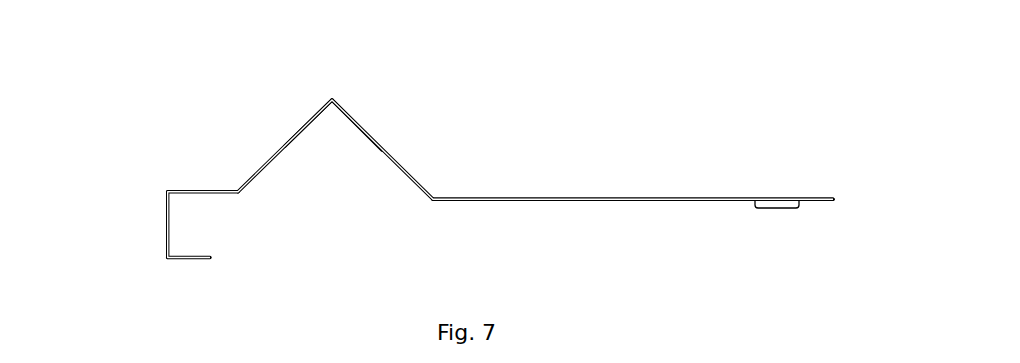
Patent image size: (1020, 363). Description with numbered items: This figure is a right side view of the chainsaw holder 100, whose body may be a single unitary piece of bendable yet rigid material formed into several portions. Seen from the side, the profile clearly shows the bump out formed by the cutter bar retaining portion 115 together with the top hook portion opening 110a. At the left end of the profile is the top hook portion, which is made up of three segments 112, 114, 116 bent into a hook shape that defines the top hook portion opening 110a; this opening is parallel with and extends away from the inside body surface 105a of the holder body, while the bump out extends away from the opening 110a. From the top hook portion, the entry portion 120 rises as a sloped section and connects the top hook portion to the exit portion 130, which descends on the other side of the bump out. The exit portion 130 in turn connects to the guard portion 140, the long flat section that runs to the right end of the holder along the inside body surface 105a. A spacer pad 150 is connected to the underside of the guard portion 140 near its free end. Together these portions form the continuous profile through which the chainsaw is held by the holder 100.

The chainsaw holder 100 is at (157, 125).
The inside body surface 105a is at (568, 201).
The top hook portion opening 110a is at (217, 219).
The segment 112 is at (200, 262).
The segment 114 is at (165, 223).
The cutter bar retaining portion 115 is at (372, 130).
The segment 116 is at (207, 190).
The entry portion 120 is at (283, 142).
The exit portion 130 is at (412, 168).
The guard portion 140 is at (682, 197).
The spacer pad 150 is at (778, 208).